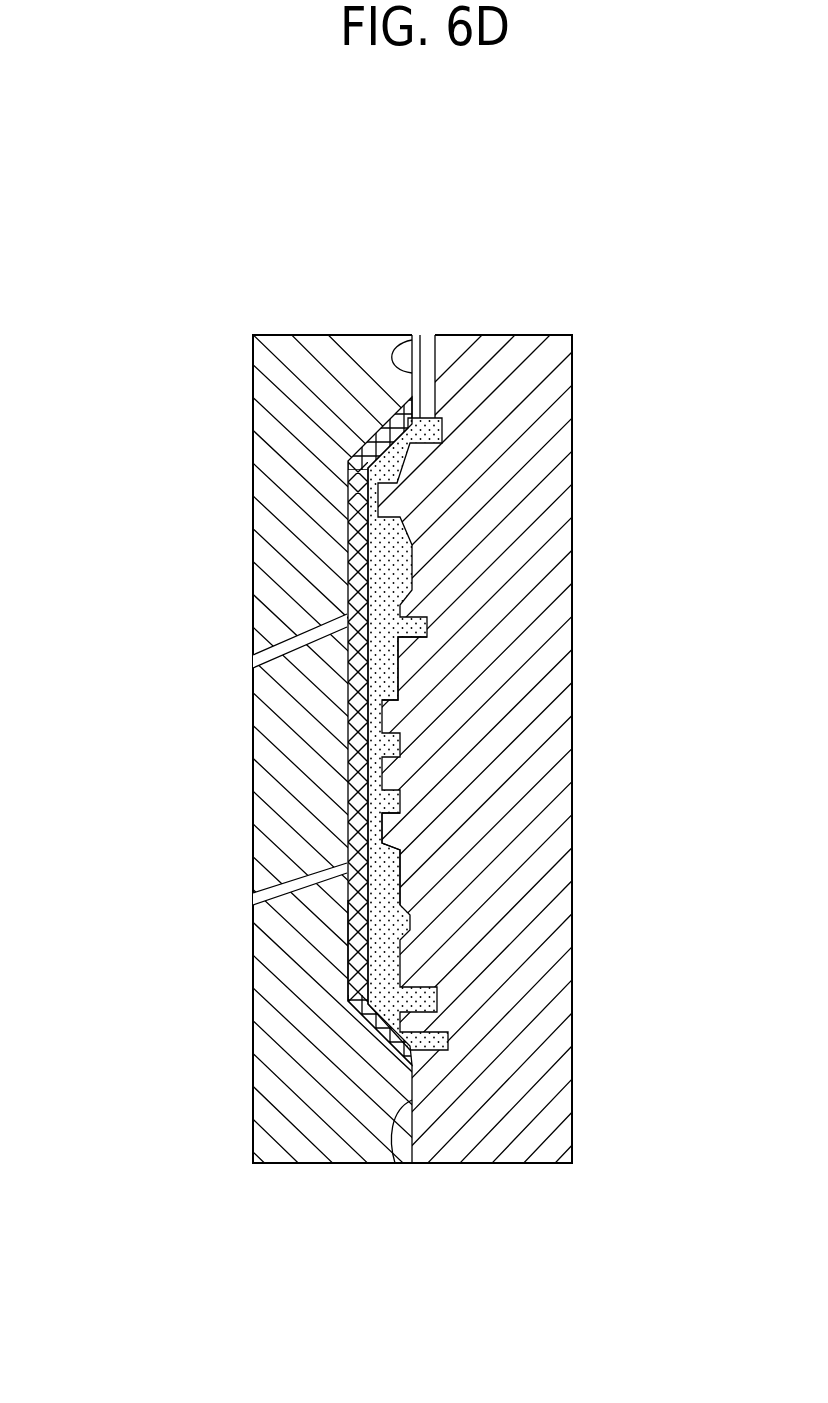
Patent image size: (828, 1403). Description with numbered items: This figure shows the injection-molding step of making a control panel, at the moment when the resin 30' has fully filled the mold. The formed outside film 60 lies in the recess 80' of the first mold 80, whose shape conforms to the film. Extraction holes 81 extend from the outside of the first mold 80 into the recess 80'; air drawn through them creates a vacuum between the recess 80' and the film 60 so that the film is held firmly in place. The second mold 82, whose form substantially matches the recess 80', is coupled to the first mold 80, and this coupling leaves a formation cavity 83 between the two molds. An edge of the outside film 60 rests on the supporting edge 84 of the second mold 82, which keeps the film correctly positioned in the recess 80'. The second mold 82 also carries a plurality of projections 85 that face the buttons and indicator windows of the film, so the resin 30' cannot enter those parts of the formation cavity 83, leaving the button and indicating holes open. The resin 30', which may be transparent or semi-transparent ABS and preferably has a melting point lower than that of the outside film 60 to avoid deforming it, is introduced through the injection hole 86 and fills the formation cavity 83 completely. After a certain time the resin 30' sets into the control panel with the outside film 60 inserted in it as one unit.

The first mold 80 is at (357, 749).
The second mold 82 is at (535, 345).
The recess 80' is at (305, 730).
The extraction holes 81 is at (267, 643).
The formation cavity 83 is at (387, 675).
The supporting edge 84 is at (407, 335).
The projections 85 is at (400, 873).
The injection hole 86 is at (428, 335).
The resin 30' is at (516, 734).
The outside film 60 is at (350, 972).